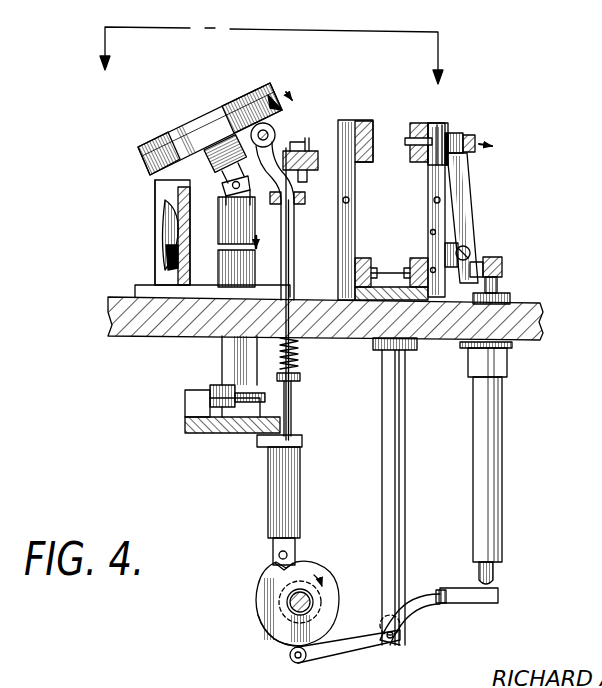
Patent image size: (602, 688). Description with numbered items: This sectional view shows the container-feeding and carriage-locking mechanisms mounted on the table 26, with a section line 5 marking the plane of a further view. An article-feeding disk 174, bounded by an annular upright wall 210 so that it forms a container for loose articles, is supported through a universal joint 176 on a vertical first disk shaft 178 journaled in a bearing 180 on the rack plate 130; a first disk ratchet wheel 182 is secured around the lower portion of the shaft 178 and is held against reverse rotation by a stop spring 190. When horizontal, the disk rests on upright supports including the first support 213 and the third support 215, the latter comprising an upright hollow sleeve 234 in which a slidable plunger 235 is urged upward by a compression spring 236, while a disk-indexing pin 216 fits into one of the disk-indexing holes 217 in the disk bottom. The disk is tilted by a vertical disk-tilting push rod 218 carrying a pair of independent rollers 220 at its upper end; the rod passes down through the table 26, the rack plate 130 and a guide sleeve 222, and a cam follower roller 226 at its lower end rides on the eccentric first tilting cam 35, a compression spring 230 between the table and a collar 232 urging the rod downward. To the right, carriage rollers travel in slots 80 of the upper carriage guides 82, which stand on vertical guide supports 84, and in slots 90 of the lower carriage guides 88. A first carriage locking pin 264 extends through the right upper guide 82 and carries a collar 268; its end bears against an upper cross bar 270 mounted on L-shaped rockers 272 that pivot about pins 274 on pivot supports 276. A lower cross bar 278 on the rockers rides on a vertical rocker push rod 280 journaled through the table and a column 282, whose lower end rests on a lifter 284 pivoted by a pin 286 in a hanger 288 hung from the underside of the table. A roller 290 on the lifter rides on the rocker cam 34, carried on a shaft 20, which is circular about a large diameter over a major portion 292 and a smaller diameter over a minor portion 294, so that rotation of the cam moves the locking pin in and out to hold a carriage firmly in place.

The section line 5- 5 is at (269, 68).
The shaft 20 is at (294, 597).
The table 26 is at (545, 303).
The rocker cam 34 is at (262, 628).
The first tilting cam 35 is at (297, 567).
The longitudinal slots 80 is at (375, 118).
The upper carriage guides 82 is at (425, 165).
The vertical carriage guide supports 84 is at (428, 222).
The lower carriage guides 88 is at (400, 238).
The longitudinal slots 90 is at (391, 269).
The rack plate 130 is at (185, 422).
The article-feeding disk 174 is at (140, 156).
The universal joint 176 is at (219, 179).
The first disk shaft 178 is at (222, 355).
The bearing 180 is at (213, 430).
The first disk ratchet wheel 182 is at (300, 395).
The stop spring 190 is at (218, 390).
The annular upright wall 210 is at (257, 85).
The first upright support 213 is at (296, 218).
The third upright support 215 is at (150, 198).
The disk-indexing pin 216 is at (307, 137).
The disk-indexing holes 217 is at (275, 122).
The disk-tilting push rod 218 is at (290, 255).
The independent rollers 220 is at (237, 165).
The guide sleeve 222 is at (300, 484).
The cam follower roller 226 is at (270, 550).
The first disk-push-rod compression spring 230 is at (305, 356).
The collar 232 is at (305, 378).
The upright hollow sleeve 234 is at (155, 262).
The slidable plunger 235 is at (170, 222).
The compression spring 236 is at (170, 247).
The first carriage locking pin 264 is at (418, 117).
The collar 268 is at (450, 128).
The upper cross bar 270 is at (472, 134).
The L-shaped rockers 272 is at (468, 180).
The pivot pins 274 is at (478, 250).
The pivot supports 276 is at (455, 245).
The lower cross bar 278 is at (502, 258).
The rocker push rod 280 is at (500, 285).
The column 282 is at (505, 412).
The lifter 284 is at (470, 605).
The pivot pin 286 is at (400, 640).
The hanger 288 is at (406, 472).
The roller 290 is at (288, 660).
The major portion 292 is at (260, 595).
The minor portion 294 is at (340, 598).